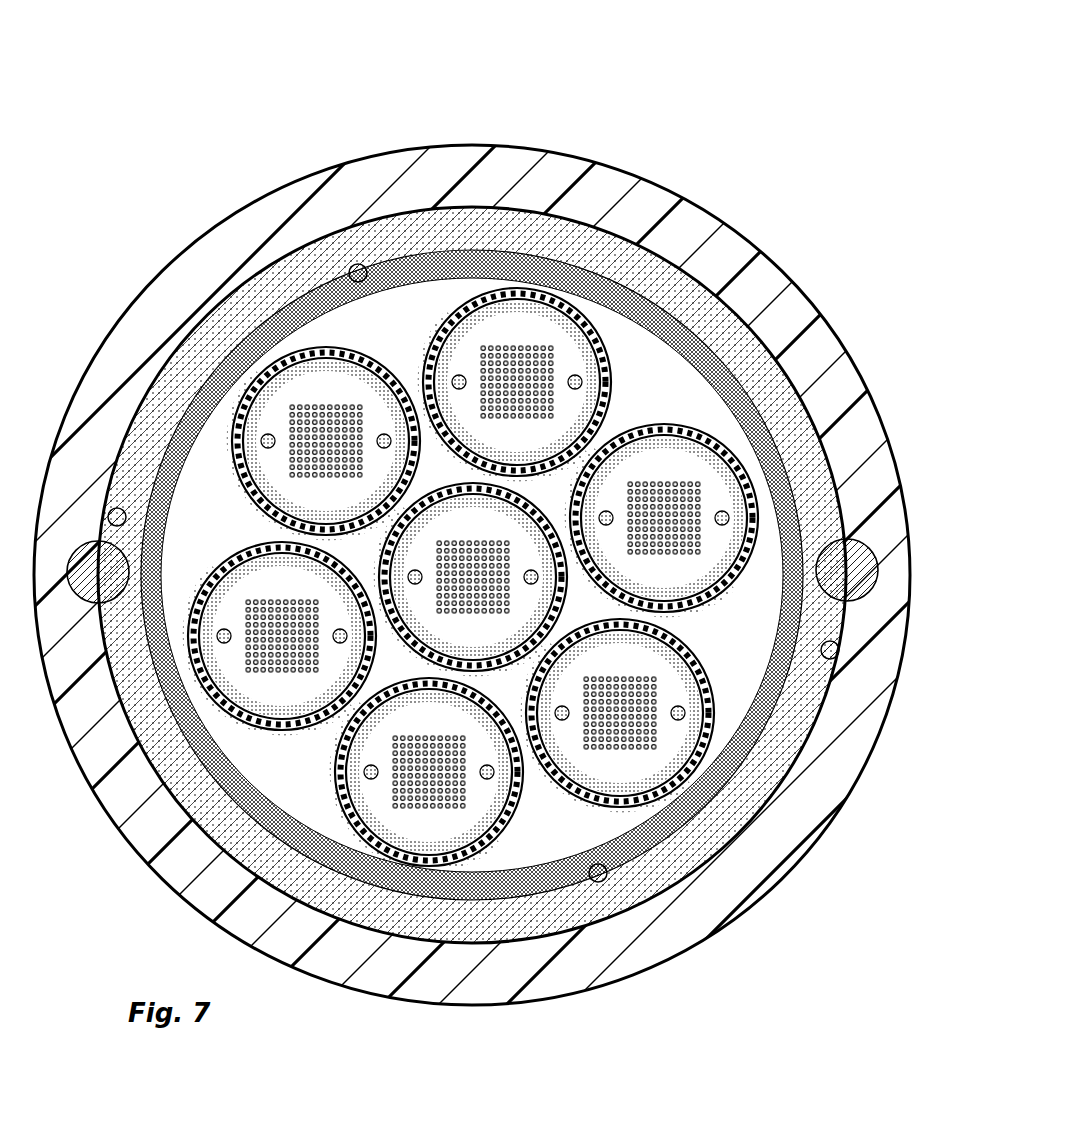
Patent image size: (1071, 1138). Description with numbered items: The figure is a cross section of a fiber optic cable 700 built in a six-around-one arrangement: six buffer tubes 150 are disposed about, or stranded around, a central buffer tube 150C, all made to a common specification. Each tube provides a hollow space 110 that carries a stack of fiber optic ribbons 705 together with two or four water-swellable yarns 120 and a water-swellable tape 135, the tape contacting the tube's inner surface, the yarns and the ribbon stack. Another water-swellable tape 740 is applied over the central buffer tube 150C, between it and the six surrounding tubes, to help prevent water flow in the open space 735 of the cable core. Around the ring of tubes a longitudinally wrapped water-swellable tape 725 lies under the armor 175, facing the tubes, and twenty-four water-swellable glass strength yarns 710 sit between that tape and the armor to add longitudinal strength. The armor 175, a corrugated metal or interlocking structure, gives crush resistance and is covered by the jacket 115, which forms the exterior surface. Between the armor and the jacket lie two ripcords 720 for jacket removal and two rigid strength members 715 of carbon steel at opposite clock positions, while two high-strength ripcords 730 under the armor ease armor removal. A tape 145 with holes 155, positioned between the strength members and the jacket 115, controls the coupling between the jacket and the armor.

The fiber optic cable 700 is at (742, 60).
The jacket 115 is at (547, 977).
The water-swellable glass strength yarns 710 is at (753, 863).
The holes 155 is at (313, 245).
The tape 145 is at (257, 282).
The armor 175 is at (222, 332).
The buffer tube 150 is at (655, 305).
The water-swellable tape 725 is at (390, 267).
The open space 735 is at (472, 575).
The rigid strength members 715 is at (850, 565).
The ripcords 720 is at (836, 658).
The high-strength ripcords 730 is at (604, 880).
The water-swellable tape 740 is at (567, 608).
The stack of fiber optic ribbons 705 is at (600, 313).
The central buffer tube 150C is at (553, 493).
The space 110 is at (470, 609).
The water-swellable tape 135 is at (543, 360).
The water-swellable yarns 120 is at (460, 377).